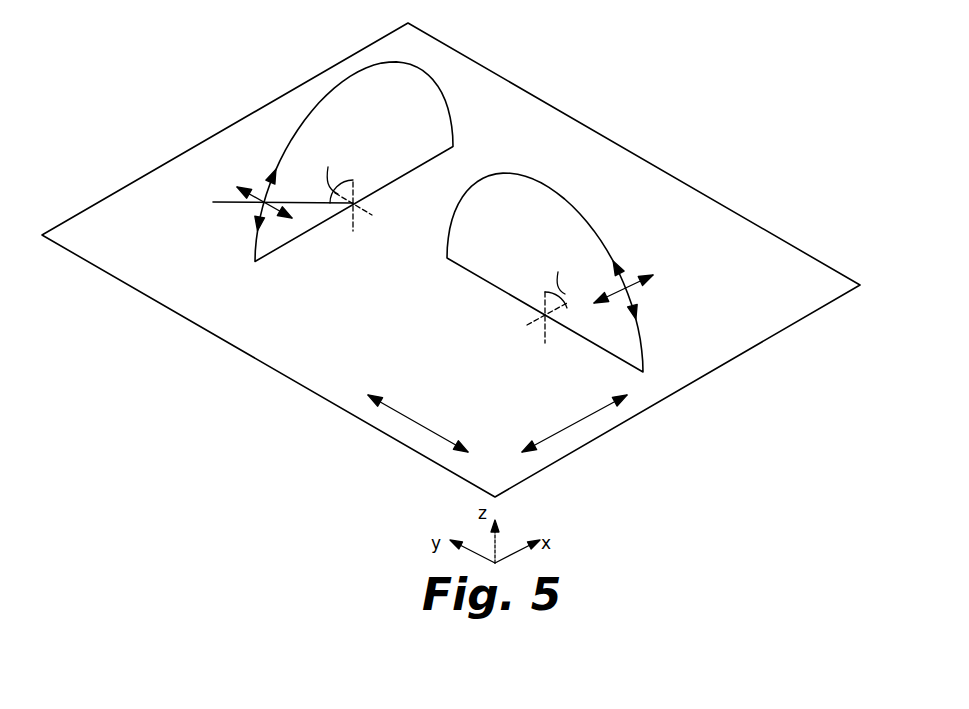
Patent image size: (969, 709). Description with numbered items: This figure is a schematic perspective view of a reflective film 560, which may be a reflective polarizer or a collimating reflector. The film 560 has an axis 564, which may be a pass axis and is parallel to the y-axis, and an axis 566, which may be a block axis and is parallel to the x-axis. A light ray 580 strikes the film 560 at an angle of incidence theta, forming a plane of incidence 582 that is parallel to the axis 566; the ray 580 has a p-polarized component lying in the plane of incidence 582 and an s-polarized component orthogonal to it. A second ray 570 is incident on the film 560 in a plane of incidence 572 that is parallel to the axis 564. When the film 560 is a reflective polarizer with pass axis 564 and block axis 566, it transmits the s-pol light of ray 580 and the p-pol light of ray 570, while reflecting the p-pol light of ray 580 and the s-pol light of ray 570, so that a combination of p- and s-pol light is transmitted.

The reflective film 560 is at (173, 290).
The axis 564 is at (410, 423).
The axis 566 is at (570, 423).
The ray 570 is at (657, 280).
The plane of incidence 572 is at (558, 185).
The light ray 580 is at (223, 200).
The plane of incidence 582 is at (347, 75).